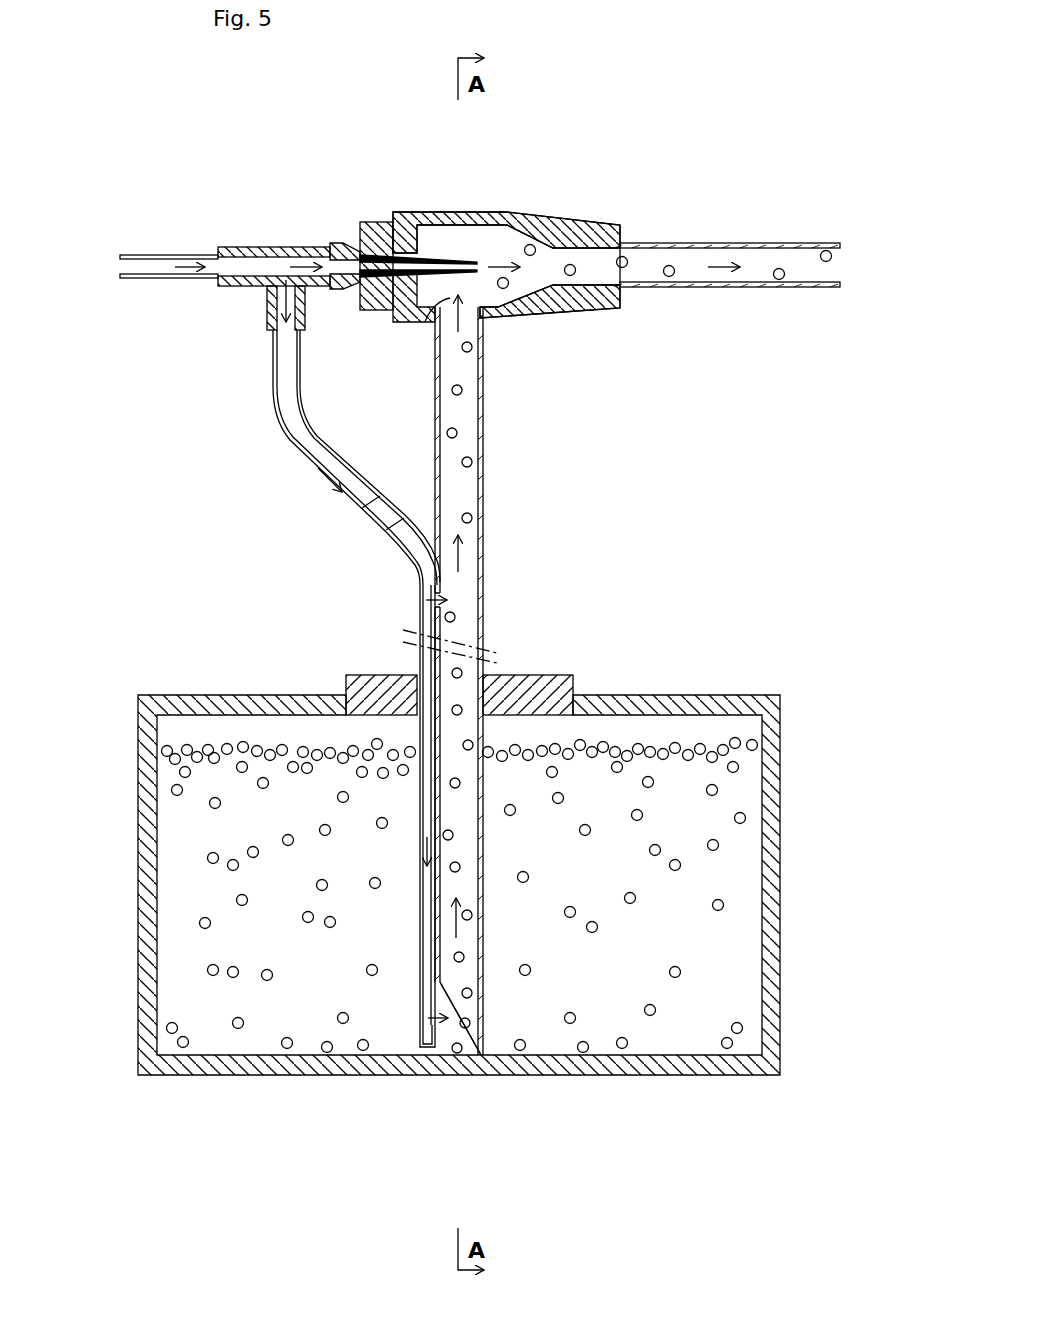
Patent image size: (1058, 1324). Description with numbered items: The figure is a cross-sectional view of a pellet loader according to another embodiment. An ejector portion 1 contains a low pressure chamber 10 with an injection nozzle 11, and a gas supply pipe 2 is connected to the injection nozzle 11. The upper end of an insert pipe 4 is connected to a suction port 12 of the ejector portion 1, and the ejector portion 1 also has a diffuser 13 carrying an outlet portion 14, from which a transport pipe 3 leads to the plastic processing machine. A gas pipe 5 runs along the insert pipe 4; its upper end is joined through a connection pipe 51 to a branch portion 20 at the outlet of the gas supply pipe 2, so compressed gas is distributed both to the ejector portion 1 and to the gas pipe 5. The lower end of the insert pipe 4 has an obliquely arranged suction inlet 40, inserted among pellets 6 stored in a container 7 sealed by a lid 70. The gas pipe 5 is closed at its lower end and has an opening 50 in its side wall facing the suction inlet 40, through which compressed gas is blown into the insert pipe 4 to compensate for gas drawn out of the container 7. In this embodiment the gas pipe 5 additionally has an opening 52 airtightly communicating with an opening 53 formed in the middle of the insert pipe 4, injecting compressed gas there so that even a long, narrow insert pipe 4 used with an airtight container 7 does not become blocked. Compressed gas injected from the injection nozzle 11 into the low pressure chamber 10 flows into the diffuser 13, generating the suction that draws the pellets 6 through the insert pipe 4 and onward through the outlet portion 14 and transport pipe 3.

The ejector portion 1 is at (543, 212).
The gas supply pipe 2 is at (160, 255).
The transport pipe 3 is at (705, 243).
The insert pipe 4 is at (484, 540).
The gas pipe 5 is at (418, 660).
The pellets 6 is at (778, 286).
The container 7 is at (781, 880).
The low pressure chamber 10 is at (482, 238).
The injection nozzle 11 is at (400, 216).
The suction port 12 is at (445, 300).
The diffuser 13 is at (545, 318).
The outlet portion 14 is at (622, 273).
The branch portion 20 is at (268, 300).
The suction inlet 40 is at (466, 1025).
The opening 50 is at (432, 1018).
The connection pipe 51 is at (292, 445).
The opening 52 is at (428, 600).
The opening 53 is at (447, 600).
The lid 70 is at (565, 675).